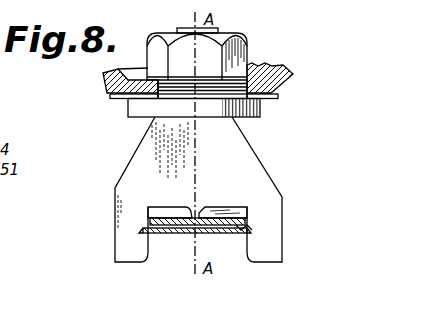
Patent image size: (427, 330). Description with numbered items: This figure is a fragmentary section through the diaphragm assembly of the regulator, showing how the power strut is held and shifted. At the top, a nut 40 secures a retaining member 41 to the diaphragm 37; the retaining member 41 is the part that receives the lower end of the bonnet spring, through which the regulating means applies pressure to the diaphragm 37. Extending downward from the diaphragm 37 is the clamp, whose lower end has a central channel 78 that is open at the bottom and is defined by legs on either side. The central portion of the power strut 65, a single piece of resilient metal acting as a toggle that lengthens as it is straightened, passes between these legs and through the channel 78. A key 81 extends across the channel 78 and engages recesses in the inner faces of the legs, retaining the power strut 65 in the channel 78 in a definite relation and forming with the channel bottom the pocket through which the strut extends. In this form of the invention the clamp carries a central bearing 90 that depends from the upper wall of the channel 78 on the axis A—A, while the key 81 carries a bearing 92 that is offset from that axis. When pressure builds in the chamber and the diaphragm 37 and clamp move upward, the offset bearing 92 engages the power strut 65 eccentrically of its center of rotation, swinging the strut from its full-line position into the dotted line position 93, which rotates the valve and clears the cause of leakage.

The nut 40 is at (250, 43).
The retaining member 41 is at (293, 77).
The diaphragm 37 is at (279, 100).
The central channel 78 is at (238, 252).
The central bearing 90 is at (180, 206).
The dotted line position 93 is at (228, 207).
The power strut 65 is at (246, 222).
The key 81 is at (171, 234).
The bearing 92 is at (247, 226).